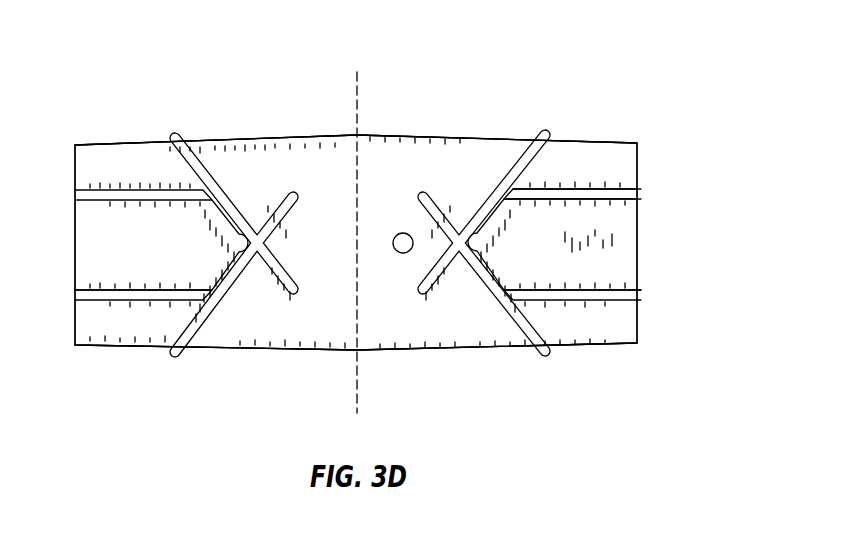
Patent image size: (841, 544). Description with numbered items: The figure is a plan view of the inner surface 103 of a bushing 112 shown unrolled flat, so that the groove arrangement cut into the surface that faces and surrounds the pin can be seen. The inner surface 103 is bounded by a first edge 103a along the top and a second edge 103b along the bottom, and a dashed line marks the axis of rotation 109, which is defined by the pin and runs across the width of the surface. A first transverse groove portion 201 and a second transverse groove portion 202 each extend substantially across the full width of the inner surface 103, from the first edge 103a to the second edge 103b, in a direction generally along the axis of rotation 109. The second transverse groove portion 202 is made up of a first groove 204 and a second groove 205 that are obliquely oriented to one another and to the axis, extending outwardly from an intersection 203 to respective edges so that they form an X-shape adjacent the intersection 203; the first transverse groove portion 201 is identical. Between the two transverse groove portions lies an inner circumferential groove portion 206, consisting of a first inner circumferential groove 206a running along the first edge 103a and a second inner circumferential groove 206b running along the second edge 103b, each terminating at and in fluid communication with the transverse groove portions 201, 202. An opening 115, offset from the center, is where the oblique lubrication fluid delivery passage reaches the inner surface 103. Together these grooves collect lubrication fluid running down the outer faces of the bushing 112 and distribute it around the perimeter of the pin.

The bushing 112 is at (614, 57).
The axis of rotation 109 is at (356, 86).
The inner surface 103 is at (393, 146).
The first edge 103a is at (243, 143).
The second edge 103b is at (316, 352).
The opening 115 is at (400, 232).
The first transverse groove portion 201 is at (251, 297).
The second transverse groove portion 202 is at (460, 297).
The intersection 203 is at (452, 246).
The first groove 204 is at (534, 150).
The second groove 205 is at (534, 338).
The inner circumferential groove portion 206 is at (607, 204).
The first inner circumferential groove 206a is at (130, 190).
The second inner circumferential groove 206b is at (128, 302).